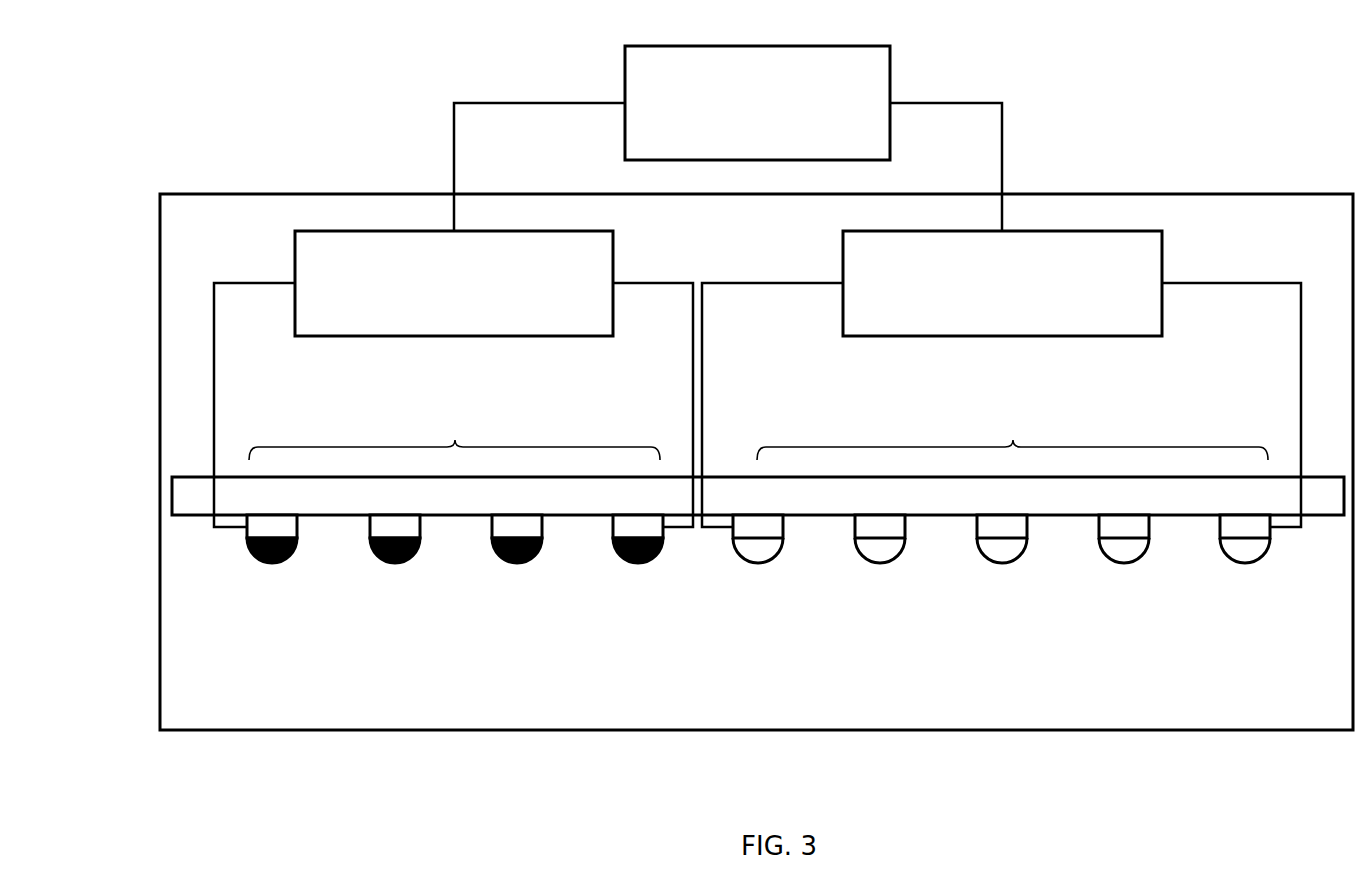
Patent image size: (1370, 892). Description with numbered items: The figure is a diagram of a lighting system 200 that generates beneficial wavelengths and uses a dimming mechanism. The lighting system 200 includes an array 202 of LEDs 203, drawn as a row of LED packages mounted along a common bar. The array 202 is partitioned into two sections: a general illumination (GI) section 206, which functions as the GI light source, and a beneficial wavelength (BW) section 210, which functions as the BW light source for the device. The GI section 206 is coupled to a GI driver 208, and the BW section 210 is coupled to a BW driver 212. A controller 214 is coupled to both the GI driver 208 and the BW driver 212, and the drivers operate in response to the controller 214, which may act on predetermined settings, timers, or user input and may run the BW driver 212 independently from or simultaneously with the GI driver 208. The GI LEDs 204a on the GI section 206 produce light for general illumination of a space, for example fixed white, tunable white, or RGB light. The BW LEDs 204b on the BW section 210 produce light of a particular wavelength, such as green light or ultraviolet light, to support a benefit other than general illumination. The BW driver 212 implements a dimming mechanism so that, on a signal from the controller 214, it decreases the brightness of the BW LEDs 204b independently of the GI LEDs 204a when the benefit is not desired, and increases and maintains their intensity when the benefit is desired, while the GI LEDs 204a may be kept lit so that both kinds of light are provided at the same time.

The lighting system 200 is at (385, 116).
The array 202 is at (202, 500).
The LEDs 203 is at (758, 585).
The GI LEDs 204a is at (785, 565).
The BW LEDs 204b is at (613, 565).
The general illumination section 206 is at (1012, 426).
The general illumination driver 208 is at (1002, 283).
The beneficial wavelength section 210 is at (454, 426).
The beneficial wavelength driver 212 is at (454, 283).
The controller 214 is at (757, 103).